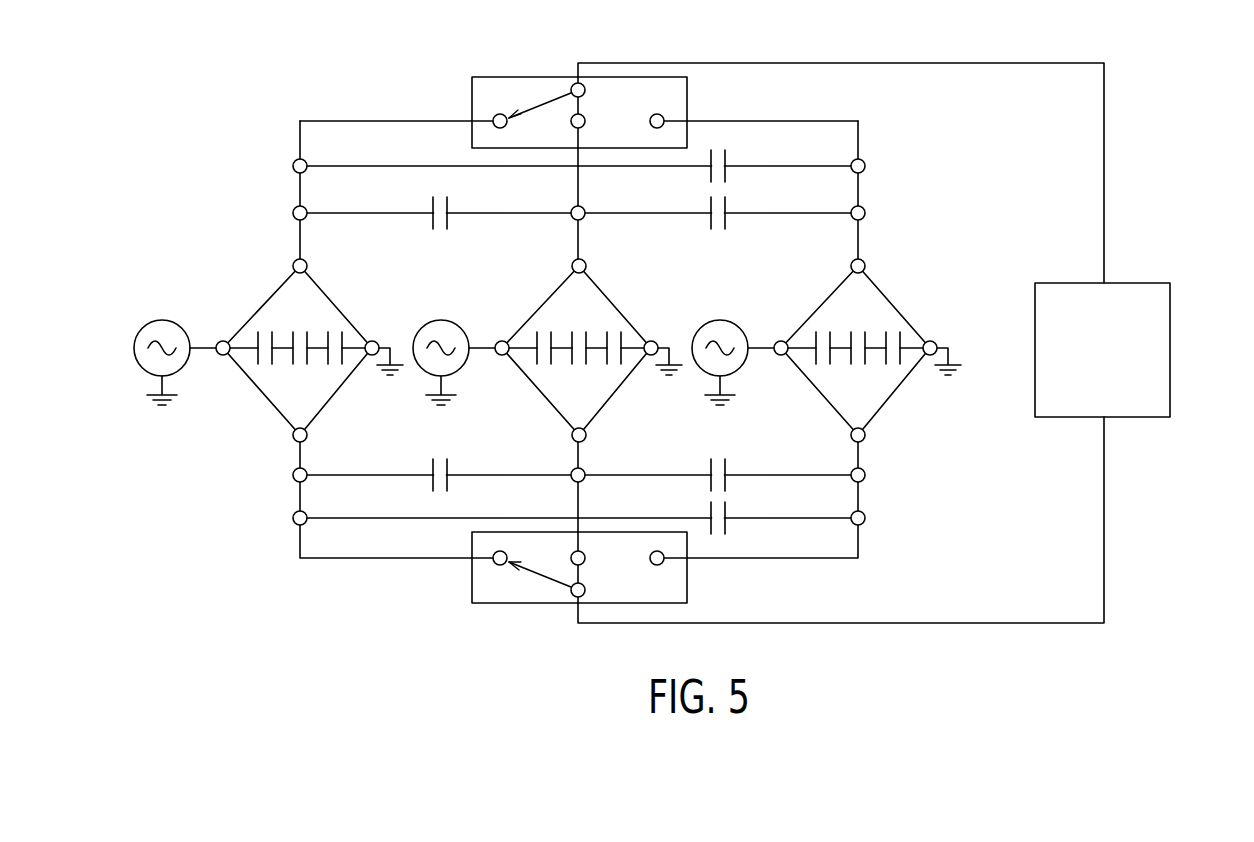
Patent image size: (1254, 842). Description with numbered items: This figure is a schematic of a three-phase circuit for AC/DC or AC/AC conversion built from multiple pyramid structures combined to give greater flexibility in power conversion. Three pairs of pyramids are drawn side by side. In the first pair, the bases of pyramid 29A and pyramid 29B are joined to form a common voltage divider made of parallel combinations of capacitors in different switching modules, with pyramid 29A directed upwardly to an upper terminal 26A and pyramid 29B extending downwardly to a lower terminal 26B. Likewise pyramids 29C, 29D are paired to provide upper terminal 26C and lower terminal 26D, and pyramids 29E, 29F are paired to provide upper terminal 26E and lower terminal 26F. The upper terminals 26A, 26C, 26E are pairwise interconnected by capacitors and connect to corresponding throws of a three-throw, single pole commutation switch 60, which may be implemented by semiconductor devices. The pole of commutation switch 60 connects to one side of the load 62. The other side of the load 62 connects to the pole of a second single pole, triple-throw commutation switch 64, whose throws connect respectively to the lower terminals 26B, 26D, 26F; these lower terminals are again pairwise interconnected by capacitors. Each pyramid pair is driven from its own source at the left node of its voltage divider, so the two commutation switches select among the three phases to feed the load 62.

The terminal 26A is at (307, 261).
The terminal 26B is at (309, 433).
The terminal 26C is at (586, 261).
The terminal 26D is at (588, 433).
The terminal 26E is at (865, 261).
The terminal 26F is at (867, 433).
The pyramid 29A is at (275, 316).
The pyramid 29B is at (275, 383).
The pyramid 29C is at (554, 316).
The pyramid 29D is at (554, 383).
The pyramid 29E is at (833, 316).
The pyramid 29F is at (833, 383).
The commutation switch 60 is at (470, 90).
The load 62 is at (1170, 350).
The second commutation switch 64 is at (527, 604).